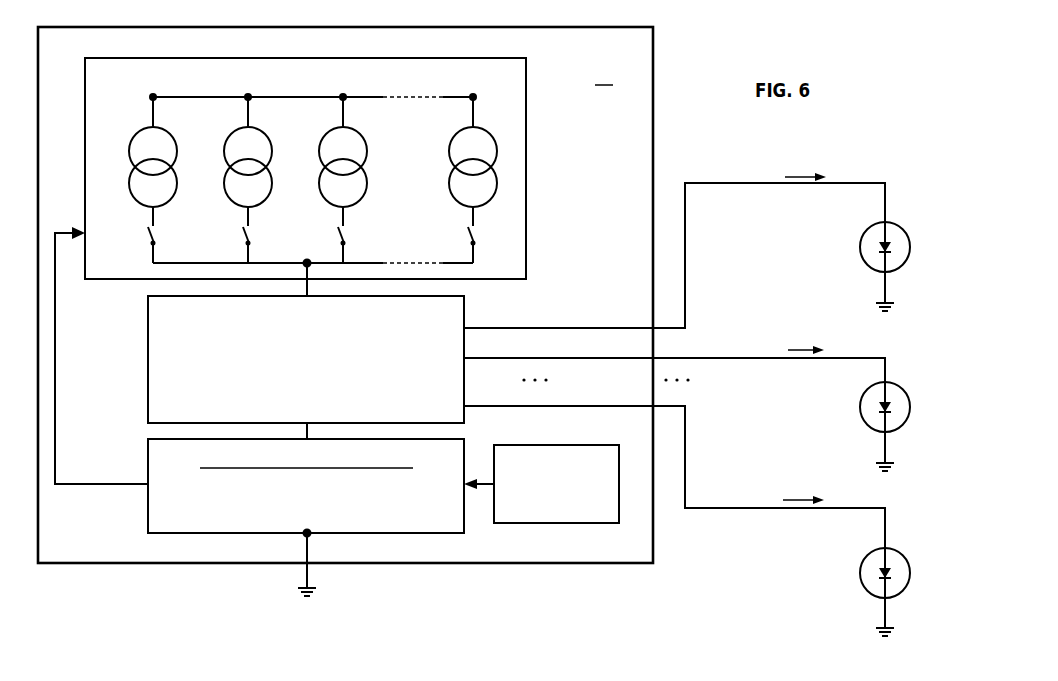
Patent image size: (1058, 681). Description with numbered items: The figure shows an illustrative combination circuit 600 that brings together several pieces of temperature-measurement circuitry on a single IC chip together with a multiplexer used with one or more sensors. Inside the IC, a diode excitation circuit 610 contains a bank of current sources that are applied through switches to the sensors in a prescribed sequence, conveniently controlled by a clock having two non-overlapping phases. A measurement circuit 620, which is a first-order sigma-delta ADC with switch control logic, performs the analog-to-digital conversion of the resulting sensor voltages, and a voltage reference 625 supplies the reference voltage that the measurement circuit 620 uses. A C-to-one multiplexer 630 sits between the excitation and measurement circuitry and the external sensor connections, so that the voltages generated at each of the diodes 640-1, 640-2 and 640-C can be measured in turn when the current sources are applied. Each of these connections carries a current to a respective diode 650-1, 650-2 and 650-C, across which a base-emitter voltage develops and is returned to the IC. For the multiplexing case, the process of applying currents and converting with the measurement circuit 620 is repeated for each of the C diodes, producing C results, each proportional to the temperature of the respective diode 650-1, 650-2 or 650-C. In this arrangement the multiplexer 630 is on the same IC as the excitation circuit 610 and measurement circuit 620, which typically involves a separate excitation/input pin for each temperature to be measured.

The combination circuit 600 is at (395, 293).
The diode excitation circuit 610 is at (351, 177).
The measurement circuit 620 is at (340, 509).
The voltage reference 625 is at (542, 470).
The C:1 multiplexer 630 is at (259, 355).
The diode 640-1 is at (674, 230).
The diode 640-2 is at (674, 343).
The diode 640-C is at (674, 477).
The diode 650-1 is at (843, 256).
The diode 650-2 is at (836, 419).
The diode 650-C is at (836, 581).